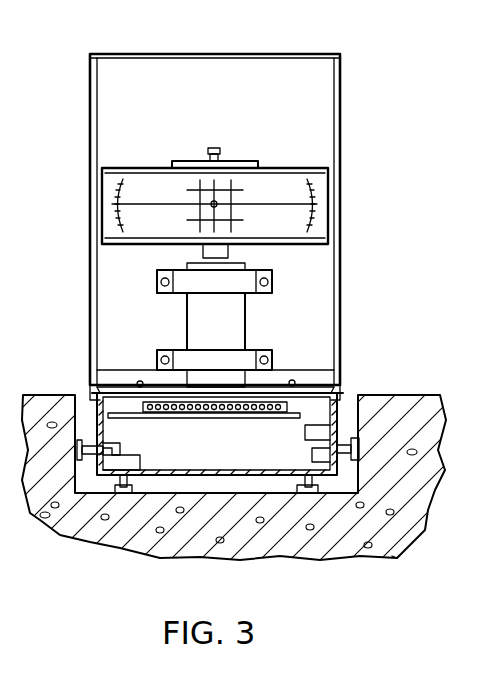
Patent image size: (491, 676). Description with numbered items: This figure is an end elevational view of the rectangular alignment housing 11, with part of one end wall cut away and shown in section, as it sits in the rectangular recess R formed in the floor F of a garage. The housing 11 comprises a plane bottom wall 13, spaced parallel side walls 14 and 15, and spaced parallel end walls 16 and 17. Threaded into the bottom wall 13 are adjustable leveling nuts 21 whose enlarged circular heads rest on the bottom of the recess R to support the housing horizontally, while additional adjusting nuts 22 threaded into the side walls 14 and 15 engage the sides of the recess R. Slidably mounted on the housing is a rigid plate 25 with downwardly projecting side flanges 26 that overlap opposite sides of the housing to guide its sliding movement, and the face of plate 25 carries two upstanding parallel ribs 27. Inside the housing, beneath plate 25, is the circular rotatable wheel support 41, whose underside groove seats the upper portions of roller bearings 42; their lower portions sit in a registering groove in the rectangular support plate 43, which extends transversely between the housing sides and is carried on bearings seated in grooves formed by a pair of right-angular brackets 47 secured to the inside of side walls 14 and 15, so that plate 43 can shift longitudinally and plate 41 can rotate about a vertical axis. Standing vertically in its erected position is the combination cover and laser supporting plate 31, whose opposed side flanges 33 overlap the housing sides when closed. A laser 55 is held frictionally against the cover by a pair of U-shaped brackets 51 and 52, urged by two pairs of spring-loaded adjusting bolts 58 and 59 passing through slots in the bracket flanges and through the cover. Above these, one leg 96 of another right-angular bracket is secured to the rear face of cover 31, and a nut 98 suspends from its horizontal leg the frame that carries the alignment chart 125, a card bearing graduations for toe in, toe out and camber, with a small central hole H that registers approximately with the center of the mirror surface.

The alignment housing 11 is at (385, 228).
The bottom wall 13 is at (273, 493).
The side wall 14 is at (77, 450).
The side wall 15 is at (325, 417).
The end wall 16 is at (212, 454).
The end wall 17 is at (120, 493).
The adjustable leveling nuts 21 is at (124, 493).
The adjusting nuts 22 is at (75, 430).
The rigid plate 25 is at (97, 375).
The side flanges 26 is at (90, 397).
The ribs 27 is at (141, 380).
The combination cover and laser supporting plate 31 is at (203, 60).
The side flanges 33 is at (89, 103).
The rotatable wheel support 41 is at (130, 418).
The roller bearings 42 is at (273, 412).
The support plate 43 is at (220, 417).
The right-angular brackets 47 is at (386, 549).
The U-shaped bracket 51 is at (274, 280).
The U-shaped bracket 52 is at (280, 351).
The laser 55 is at (230, 324).
The adjusting bolts 58 is at (157, 280).
The adjusting bolts 59 is at (165, 351).
The bracket leg 96 is at (180, 160).
The nut 98 is at (214, 148).
The alignment chart 125 is at (282, 179).
The floor F is at (408, 395).
The hole H is at (218, 206).
The recess R is at (197, 483).